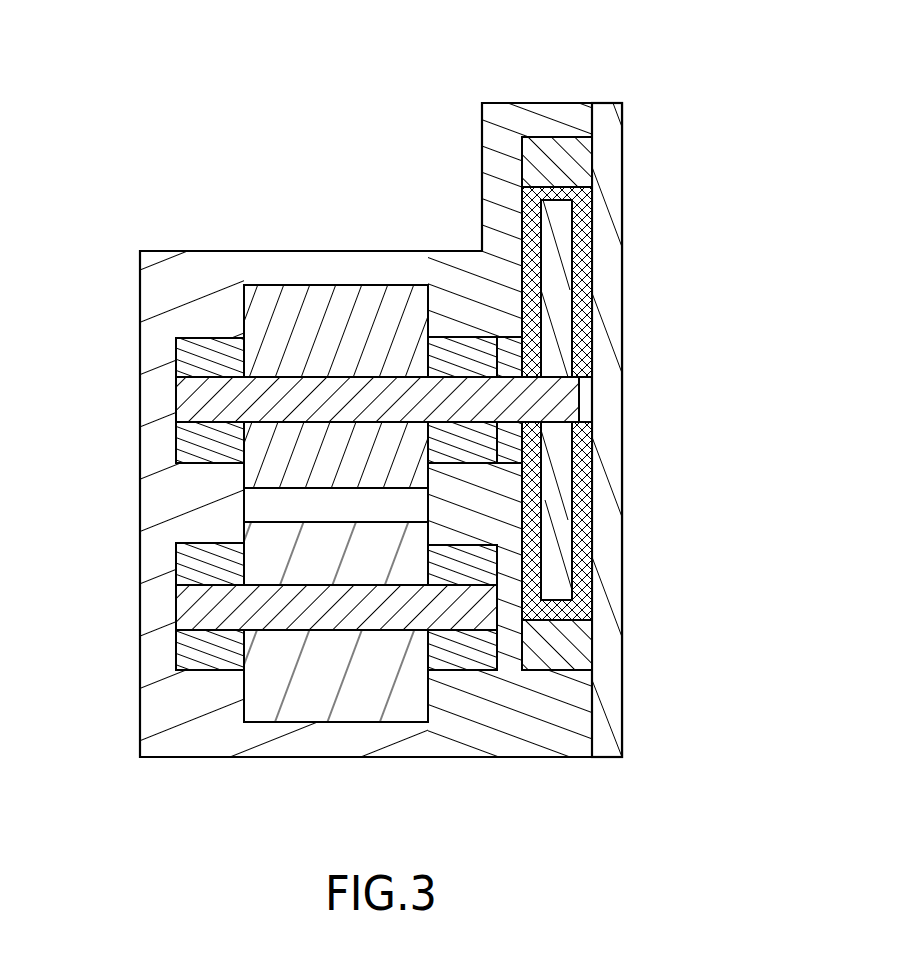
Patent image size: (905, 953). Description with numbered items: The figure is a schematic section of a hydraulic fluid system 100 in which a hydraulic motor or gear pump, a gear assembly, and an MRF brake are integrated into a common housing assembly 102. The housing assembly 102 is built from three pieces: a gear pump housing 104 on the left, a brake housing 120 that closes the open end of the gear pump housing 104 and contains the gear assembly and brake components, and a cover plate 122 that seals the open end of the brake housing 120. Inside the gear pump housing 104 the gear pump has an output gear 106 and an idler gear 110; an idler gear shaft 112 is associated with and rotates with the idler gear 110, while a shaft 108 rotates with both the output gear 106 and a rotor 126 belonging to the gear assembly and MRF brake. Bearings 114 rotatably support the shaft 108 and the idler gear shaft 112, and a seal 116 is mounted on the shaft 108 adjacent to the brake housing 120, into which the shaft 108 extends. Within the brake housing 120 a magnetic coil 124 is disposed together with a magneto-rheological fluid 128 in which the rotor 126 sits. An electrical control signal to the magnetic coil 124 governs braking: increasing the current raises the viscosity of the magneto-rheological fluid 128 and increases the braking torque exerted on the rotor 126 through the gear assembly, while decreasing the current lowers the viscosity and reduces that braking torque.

The hydraulic fluid system 100 is at (398, 420).
The housing assembly 102 is at (333, 462).
The gear pump housing 104 is at (160, 316).
The output gear 106 is at (360, 348).
The shaft 108 is at (330, 422).
The idler gear 110 is at (348, 686).
The idler gear shaft 112 is at (367, 587).
The bearings 114 is at (191, 465).
The seal 116 is at (455, 465).
The brake housing 120 is at (510, 757).
The cover plate 122 is at (622, 283).
The magnetic coil 124 is at (583, 638).
The rotor 126 is at (558, 539).
The magneto-rheological fluid 128 is at (622, 229).